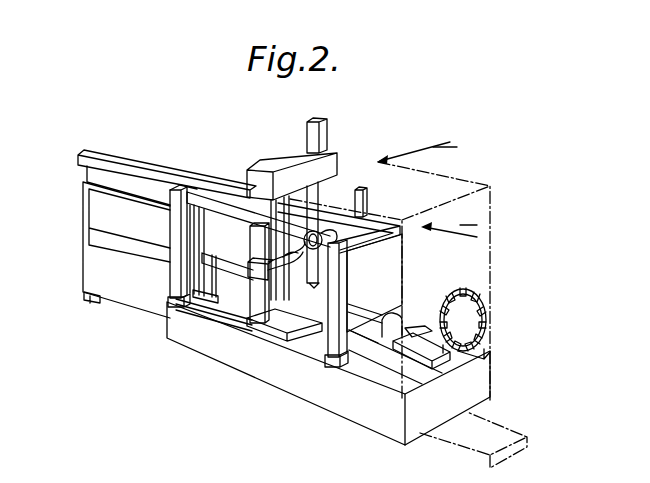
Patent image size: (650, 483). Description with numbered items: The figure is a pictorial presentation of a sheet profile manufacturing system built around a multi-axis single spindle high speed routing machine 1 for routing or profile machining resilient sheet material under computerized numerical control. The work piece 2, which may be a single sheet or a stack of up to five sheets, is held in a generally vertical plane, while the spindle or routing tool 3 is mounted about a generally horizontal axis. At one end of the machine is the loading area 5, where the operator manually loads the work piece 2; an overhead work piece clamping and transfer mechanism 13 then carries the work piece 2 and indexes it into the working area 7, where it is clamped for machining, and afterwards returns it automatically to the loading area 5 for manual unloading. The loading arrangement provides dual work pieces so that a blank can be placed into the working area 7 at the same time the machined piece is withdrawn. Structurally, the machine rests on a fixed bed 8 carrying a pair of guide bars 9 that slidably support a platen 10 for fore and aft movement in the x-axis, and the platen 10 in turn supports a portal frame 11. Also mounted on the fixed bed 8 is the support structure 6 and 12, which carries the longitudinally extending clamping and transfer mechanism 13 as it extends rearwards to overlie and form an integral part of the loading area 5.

The routing machine 1 is at (351, 154).
The work piece 2 is at (162, 192).
The spindle or routing tool 3 is at (307, 233).
The loading area 5 is at (105, 209).
The support structure 6 is at (147, 167).
The working area 7 is at (377, 266).
The fixed bed 8 is at (300, 350).
The guide bars 9 is at (415, 333).
The platen 10 is at (265, 335).
The portal frame 11 is at (247, 266).
The support structure 12 is at (171, 283).
The work piece clamping and transfer mechanism 13 is at (207, 183).